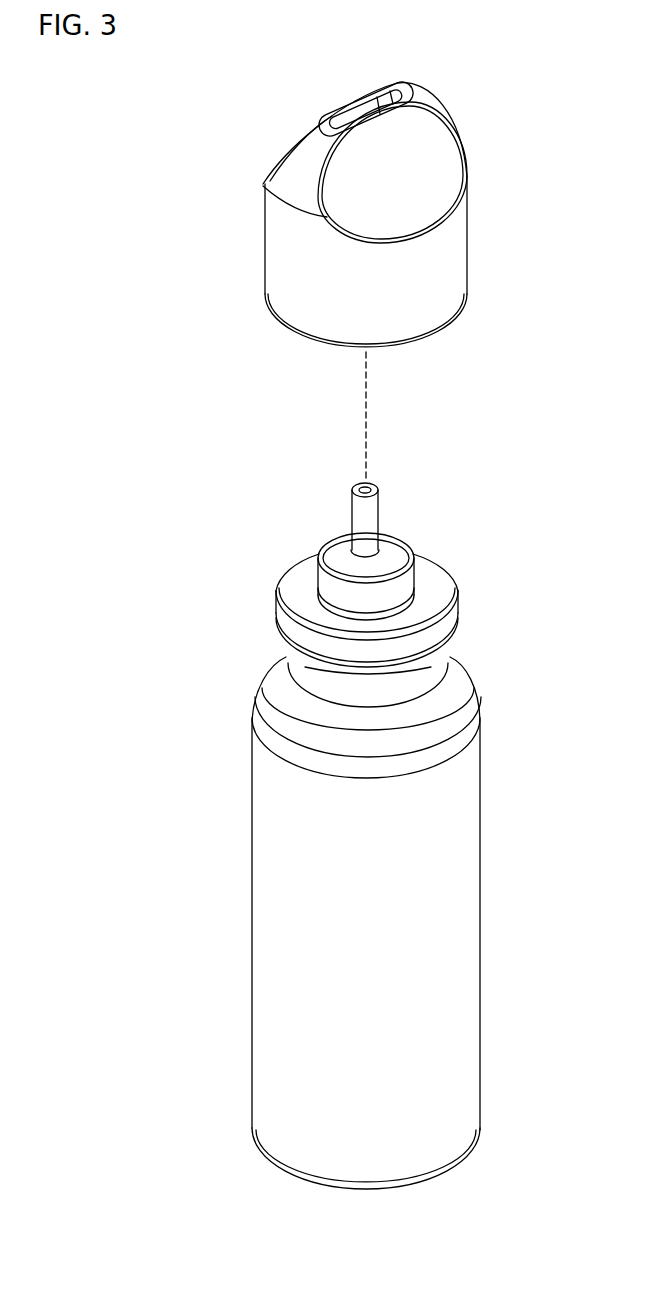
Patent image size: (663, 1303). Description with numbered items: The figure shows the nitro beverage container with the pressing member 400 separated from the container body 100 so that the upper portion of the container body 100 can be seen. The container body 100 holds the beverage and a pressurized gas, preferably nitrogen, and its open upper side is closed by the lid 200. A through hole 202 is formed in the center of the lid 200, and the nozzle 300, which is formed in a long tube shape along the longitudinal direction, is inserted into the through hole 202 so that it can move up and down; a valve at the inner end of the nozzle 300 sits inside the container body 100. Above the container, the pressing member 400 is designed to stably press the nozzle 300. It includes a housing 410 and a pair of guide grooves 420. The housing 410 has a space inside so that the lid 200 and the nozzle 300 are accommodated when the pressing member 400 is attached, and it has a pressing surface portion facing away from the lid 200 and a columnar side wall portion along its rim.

The container body 100 is at (218, 861).
The lid 200 is at (256, 555).
The through hole 202 is at (390, 538).
The nozzle 300 is at (327, 490).
The pressing member 400 is at (220, 203).
The housing 410 is at (287, 282).
The guide grooves 420 is at (277, 157).